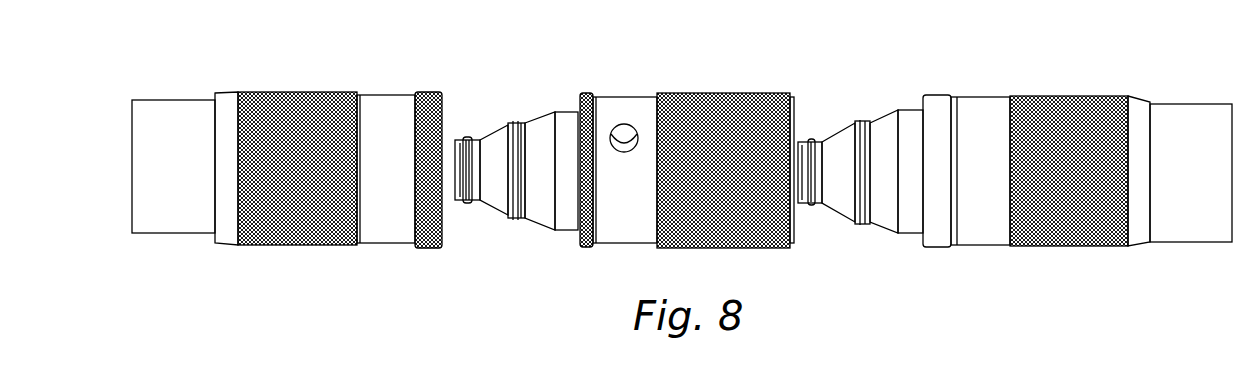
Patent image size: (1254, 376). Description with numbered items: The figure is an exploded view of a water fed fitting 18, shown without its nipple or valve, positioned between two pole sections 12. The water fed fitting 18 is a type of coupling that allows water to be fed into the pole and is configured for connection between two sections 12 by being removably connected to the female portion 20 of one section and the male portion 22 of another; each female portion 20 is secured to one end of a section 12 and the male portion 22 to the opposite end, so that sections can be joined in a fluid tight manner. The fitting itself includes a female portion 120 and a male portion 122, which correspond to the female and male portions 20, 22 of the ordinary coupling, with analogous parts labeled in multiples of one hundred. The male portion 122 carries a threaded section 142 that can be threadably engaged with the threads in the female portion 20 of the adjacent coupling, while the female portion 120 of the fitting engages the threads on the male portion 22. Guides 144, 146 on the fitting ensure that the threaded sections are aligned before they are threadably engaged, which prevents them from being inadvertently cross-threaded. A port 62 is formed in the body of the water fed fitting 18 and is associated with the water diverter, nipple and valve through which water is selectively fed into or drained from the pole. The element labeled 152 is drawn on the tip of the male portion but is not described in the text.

The section 12 is at (158, 99).
The water fed fitting 18 is at (725, 91).
The female portion 20 is at (306, 92).
The male portion 22 is at (1082, 96).
The port 62 is at (624, 124).
The female portion 120 is at (794, 97).
The male portion 122 is at (547, 117).
The threaded section 142 is at (514, 123).
The guide 144 is at (466, 137).
The guide 146 is at (563, 231).
The tip 152 is at (465, 204).